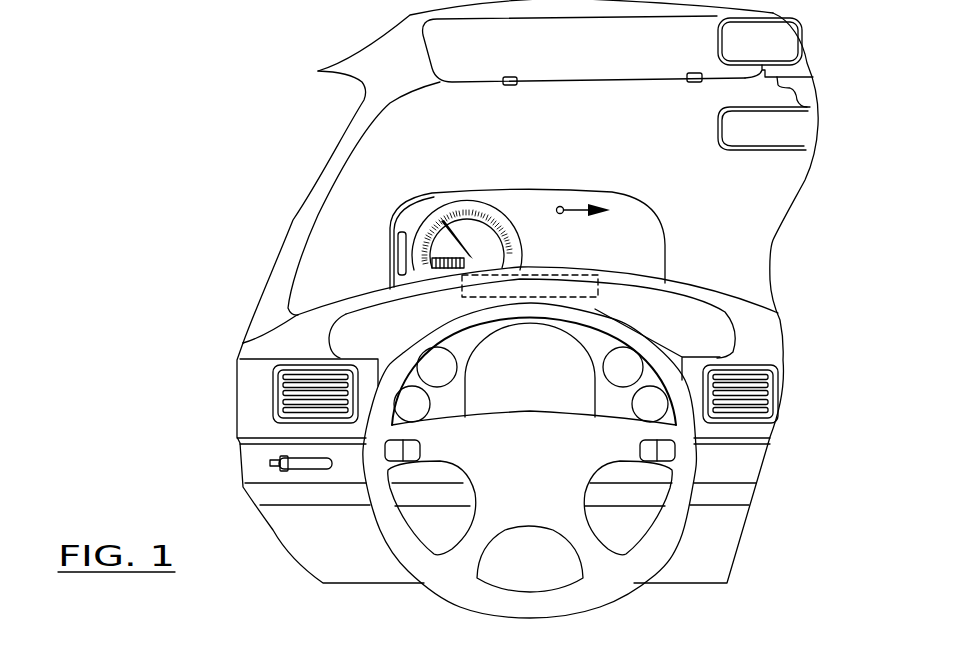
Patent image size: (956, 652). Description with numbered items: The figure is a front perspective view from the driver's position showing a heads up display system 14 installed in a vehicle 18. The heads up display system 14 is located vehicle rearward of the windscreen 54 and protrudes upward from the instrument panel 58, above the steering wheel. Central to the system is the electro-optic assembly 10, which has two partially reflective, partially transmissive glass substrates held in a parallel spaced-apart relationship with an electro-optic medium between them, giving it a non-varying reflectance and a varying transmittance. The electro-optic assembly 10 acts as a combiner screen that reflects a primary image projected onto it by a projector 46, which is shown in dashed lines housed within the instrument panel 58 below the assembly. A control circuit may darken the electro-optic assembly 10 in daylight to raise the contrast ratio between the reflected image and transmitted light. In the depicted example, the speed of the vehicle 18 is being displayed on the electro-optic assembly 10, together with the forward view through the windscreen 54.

The electro-optic assembly 10 is at (565, 190).
The heads up display system 14 is at (676, 186).
The vehicle 18 is at (232, 130).
The projector 46 is at (603, 289).
The windscreen 54 is at (750, 207).
The instrument panel 58 is at (337, 293).